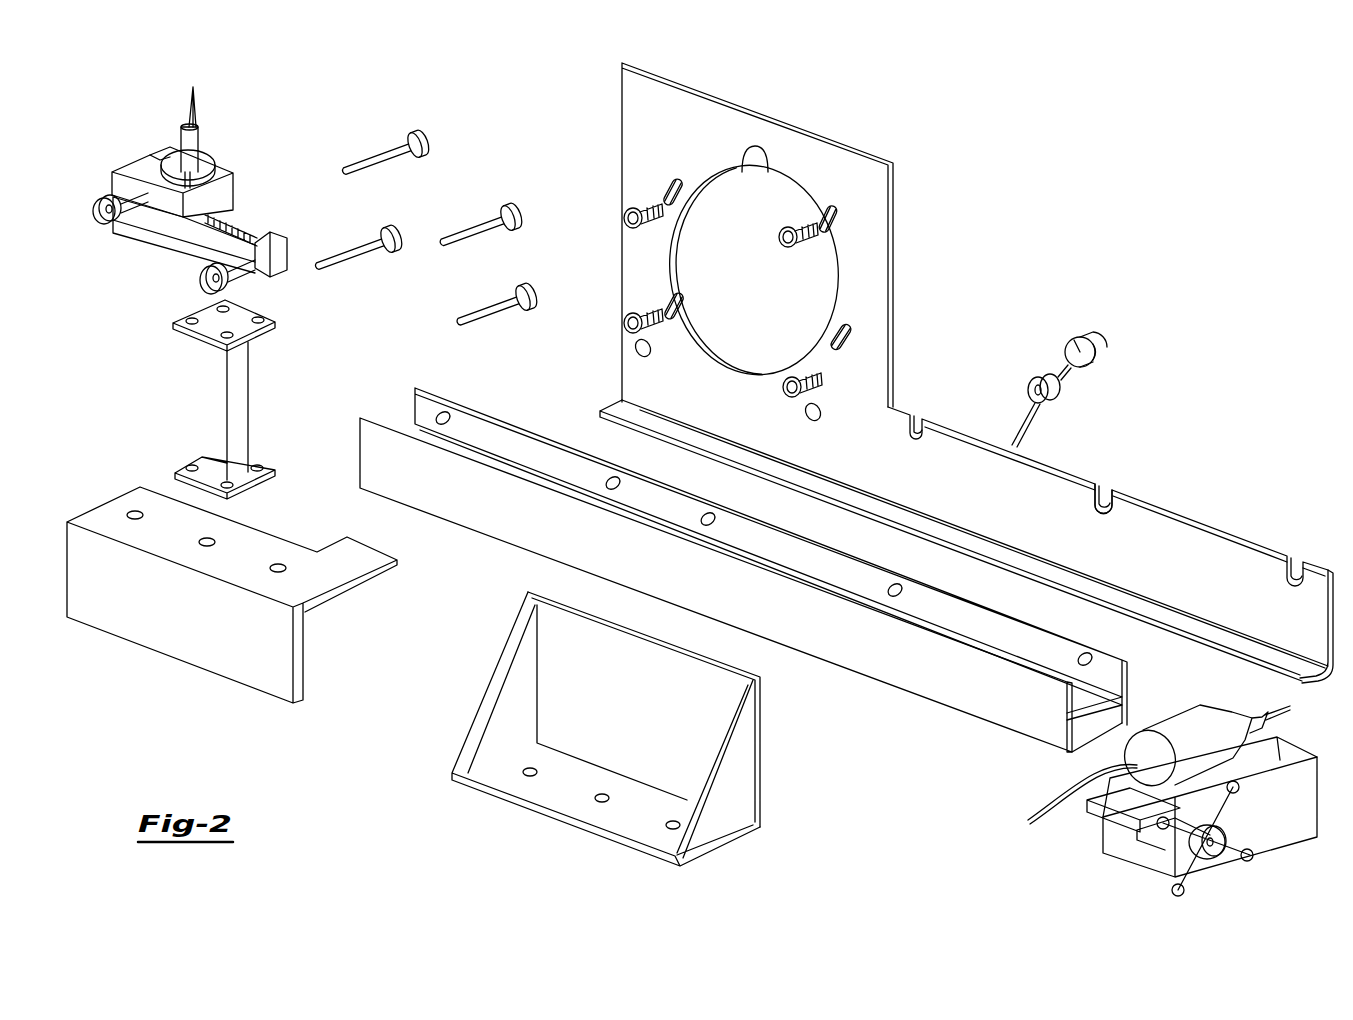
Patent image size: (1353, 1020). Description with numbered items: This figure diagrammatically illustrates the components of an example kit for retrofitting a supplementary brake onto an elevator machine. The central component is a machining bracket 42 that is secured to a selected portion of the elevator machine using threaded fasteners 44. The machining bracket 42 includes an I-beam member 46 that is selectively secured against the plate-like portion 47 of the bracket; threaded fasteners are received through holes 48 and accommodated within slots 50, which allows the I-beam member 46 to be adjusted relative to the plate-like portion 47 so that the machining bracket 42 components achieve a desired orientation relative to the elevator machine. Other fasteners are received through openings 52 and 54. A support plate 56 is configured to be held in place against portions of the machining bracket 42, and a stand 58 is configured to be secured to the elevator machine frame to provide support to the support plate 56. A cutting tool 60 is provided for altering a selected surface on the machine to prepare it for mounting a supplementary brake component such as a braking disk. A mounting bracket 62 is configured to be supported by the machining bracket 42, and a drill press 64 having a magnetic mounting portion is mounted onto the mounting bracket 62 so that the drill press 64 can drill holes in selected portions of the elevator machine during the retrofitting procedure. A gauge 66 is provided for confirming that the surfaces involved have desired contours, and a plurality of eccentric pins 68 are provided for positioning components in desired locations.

The machining bracket 42 is at (852, 268).
The threaded fasteners 44 is at (780, 240).
The I-beam member 46 is at (940, 683).
The plate-like portion 47 is at (980, 454).
The holes 48 is at (888, 594).
The slots 50 is at (1112, 490).
The openings 52 is at (606, 485).
The openings 54 is at (806, 413).
The support plate 56 is at (283, 665).
The stand 58 is at (237, 400).
The cutting tool 60 is at (195, 147).
The mounting bracket 62 is at (730, 778).
The drill press 64 is at (1295, 757).
The gauge 66 is at (1097, 345).
The eccentric pins 68 is at (443, 238).